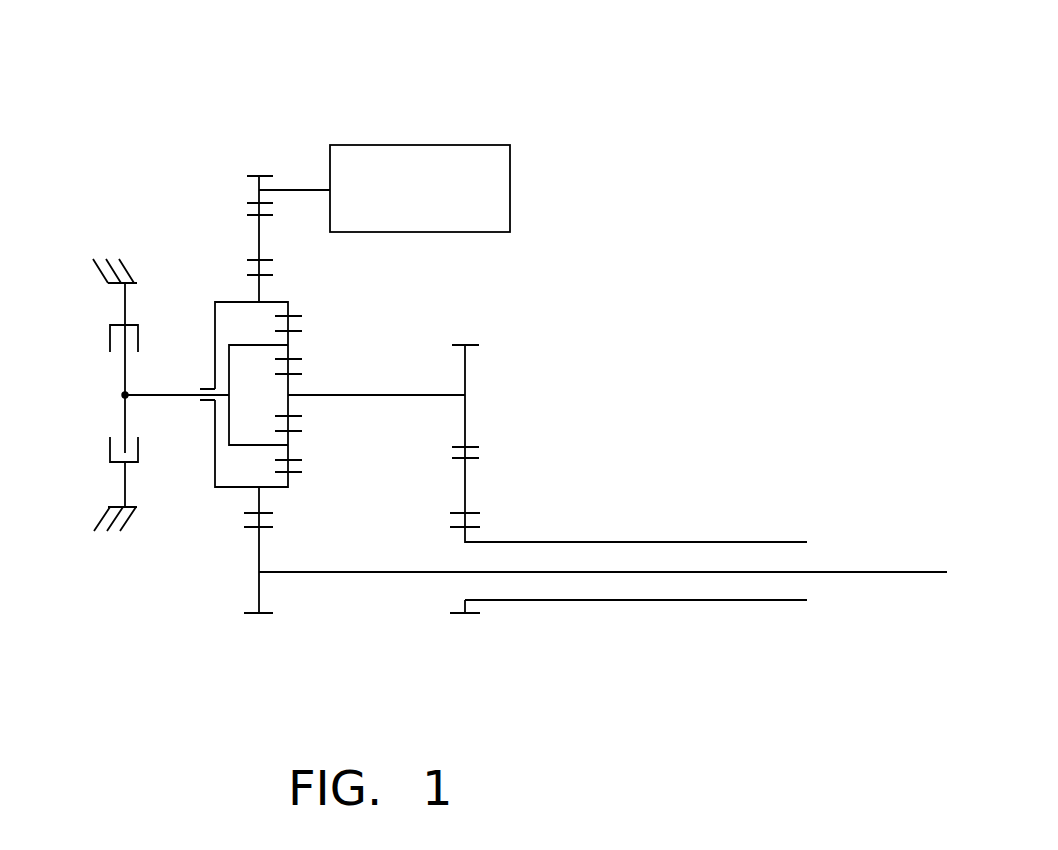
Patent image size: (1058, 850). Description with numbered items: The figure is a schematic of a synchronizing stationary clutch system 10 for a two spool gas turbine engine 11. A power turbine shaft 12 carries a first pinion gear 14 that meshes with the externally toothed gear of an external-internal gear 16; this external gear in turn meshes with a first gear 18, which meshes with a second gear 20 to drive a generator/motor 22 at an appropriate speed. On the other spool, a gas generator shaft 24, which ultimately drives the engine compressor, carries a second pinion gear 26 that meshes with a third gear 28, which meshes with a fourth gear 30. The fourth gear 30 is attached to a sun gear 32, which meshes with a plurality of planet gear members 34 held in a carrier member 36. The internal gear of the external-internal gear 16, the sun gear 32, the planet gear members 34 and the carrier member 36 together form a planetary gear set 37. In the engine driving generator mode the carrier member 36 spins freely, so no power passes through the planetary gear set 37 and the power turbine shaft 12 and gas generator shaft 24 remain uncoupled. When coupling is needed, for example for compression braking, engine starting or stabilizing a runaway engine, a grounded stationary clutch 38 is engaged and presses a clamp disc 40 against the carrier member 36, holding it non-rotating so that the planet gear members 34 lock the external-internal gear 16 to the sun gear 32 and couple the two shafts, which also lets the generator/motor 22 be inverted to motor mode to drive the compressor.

The synchronizing stationary clutch system 10 is at (638, 268).
The two spool gas turbine engine 11 is at (570, 90).
The power turbine shaft 12 is at (820, 564).
The first pinion gear 14 is at (263, 613).
The external-internal gear 16 is at (233, 489).
The first gear 18 is at (259, 238).
The second gear 20 is at (248, 175).
The generator/motor 22 is at (478, 145).
The gas generator shaft 24 is at (691, 611).
The second pinion gear 26 is at (474, 615).
The third gear 28 is at (465, 487).
The fourth gear 30 is at (465, 380).
The sun gear 32 is at (295, 417).
The planet gear members 34 is at (291, 340).
The carrier member 36 is at (229, 415).
The planetary gear set 37 is at (343, 295).
The grounded stationary clutch 38 is at (125, 303).
The clamp disc 40 is at (125, 394).